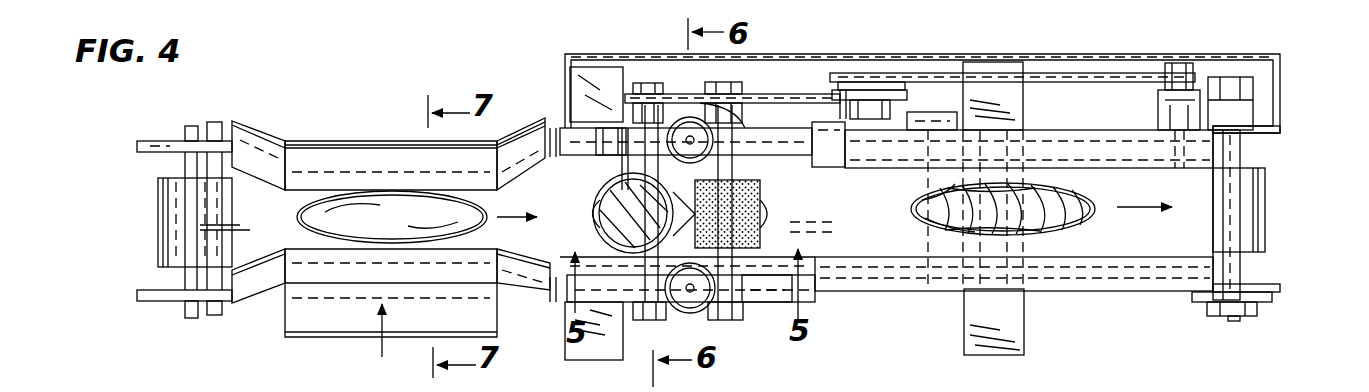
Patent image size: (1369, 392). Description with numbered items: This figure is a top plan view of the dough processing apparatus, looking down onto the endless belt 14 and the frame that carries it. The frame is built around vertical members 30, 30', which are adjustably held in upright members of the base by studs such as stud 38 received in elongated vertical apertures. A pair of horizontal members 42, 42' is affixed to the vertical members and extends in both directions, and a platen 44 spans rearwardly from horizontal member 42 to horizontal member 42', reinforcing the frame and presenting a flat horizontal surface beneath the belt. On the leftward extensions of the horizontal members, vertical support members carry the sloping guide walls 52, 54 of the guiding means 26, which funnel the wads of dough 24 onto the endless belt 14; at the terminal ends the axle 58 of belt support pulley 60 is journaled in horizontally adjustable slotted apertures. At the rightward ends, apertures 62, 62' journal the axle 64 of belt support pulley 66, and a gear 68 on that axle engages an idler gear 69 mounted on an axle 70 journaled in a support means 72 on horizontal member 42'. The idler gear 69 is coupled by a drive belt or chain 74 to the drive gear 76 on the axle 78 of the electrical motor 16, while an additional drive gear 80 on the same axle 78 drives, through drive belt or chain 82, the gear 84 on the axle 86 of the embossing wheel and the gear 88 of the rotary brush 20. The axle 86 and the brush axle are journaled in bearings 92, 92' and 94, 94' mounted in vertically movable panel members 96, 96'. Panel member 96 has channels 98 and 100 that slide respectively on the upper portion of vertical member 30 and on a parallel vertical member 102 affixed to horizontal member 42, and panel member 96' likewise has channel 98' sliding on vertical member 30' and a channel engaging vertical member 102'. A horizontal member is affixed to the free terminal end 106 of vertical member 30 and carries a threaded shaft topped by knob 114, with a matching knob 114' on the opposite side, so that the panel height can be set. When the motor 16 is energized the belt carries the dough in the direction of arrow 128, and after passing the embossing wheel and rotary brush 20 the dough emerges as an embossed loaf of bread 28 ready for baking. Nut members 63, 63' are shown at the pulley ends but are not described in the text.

The endless belt 14 is at (1095, 250).
The electrical motor 16 is at (916, 118).
The rotary brush 20 is at (760, 196).
The wads of dough 24 is at (386, 205).
The guiding means 26 is at (318, 168).
The embossed loaf of bread 28 is at (1095, 192).
The vertical member 30 is at (540, 312).
The vertical member 30' is at (530, 107).
The stud 38 is at (1000, 62).
The horizontal member 42 is at (705, 307).
The horizontal member 42' is at (704, 145).
The platen 44 is at (1150, 267).
The sloping guide wall 52 is at (472, 155).
The sloping guide wall 54 is at (305, 265).
The axle 58 is at (192, 318).
The belt support pulley 60 is at (158, 268).
The aperture 62 is at (1267, 278).
The aperture 62' is at (1269, 215).
The lock nut 63 is at (1244, 336).
The upper lock nut 63' is at (1264, 103).
The axle 64 is at (1240, 322).
The belt support pulley 66 is at (1265, 255).
The gear 68 is at (1258, 65).
The idler gear 69 is at (1155, 96).
The axle 70 is at (1180, 148).
The support means 72 is at (1180, 118).
The drive belt or chain 74 is at (1113, 72).
The drive gear 76 is at (885, 90).
The axle 78 is at (900, 95).
The additional drive gear 80 is at (862, 90).
The drive belt or chain 82 is at (843, 90).
The gear 84 is at (672, 110).
The axle 86 is at (625, 140).
The gear 88 is at (735, 85).
The bearing 92 is at (651, 94).
The bearing 92' is at (690, 304).
The bearing 94 is at (704, 331).
The bearing 94' is at (687, 82).
The vertically movable panel member 96 is at (767, 301).
The vertically movable panel member 96' is at (596, 94).
The channel 98 is at (610, 331).
The channel 98' is at (620, 213).
The channel 100 is at (886, 146).
The vertical member 102 is at (719, 301).
The vertical member 102' is at (713, 96).
The free terminal end 106 is at (802, 232).
The knob 114 is at (749, 246).
The knob 114' is at (732, 82).
The arrow 128 is at (830, 226).